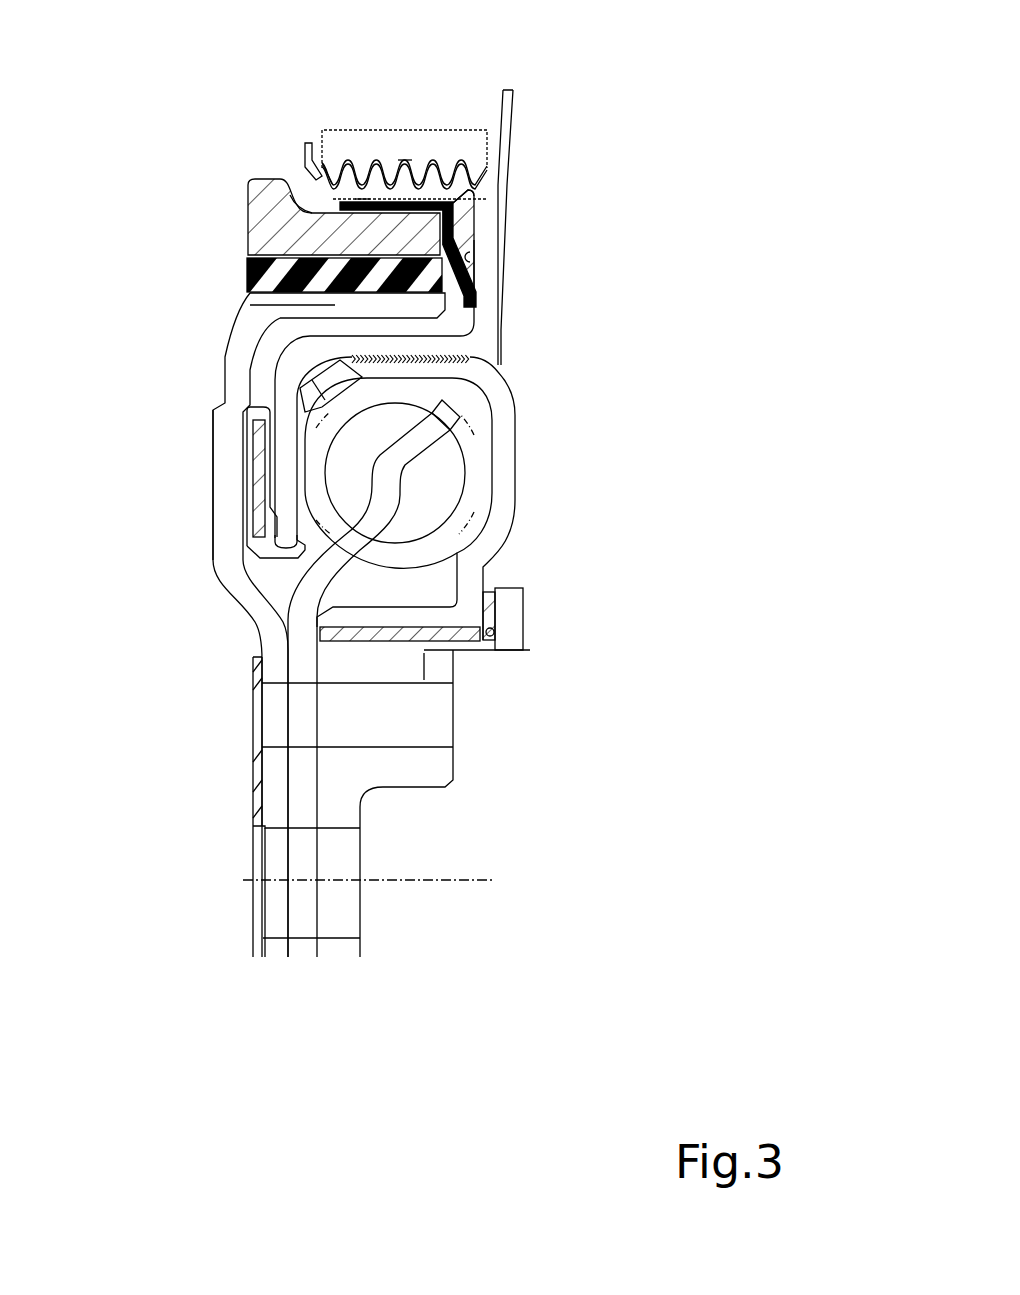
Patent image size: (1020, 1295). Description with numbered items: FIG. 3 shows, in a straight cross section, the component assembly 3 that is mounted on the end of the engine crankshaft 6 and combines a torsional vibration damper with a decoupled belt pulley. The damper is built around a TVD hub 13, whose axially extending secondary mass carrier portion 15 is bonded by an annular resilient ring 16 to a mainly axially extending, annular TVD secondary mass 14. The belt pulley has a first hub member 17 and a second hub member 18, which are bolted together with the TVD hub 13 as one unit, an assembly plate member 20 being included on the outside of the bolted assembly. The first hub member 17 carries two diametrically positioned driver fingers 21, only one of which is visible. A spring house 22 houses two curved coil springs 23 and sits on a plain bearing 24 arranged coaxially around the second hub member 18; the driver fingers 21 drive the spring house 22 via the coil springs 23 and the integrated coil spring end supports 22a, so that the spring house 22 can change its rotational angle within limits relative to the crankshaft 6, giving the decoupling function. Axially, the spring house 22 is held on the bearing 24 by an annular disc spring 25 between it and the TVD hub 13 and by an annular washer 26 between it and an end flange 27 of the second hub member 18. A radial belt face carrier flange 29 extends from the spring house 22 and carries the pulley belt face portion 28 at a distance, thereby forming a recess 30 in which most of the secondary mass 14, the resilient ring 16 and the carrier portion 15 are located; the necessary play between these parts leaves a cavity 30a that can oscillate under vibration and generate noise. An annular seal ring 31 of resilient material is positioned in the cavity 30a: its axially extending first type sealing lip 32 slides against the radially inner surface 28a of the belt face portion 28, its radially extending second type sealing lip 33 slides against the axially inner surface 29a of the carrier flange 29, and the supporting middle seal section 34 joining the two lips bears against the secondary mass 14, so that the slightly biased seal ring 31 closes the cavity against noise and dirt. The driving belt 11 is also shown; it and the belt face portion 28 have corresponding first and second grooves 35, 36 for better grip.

The component assembly 3 is at (174, 423).
The crankshaft 6 is at (466, 879).
The driving belt 11 is at (467, 142).
The TVD hub 13 is at (243, 593).
The TVD secondary mass 14 is at (262, 222).
The secondary mass carrier portion 15 is at (330, 305).
The annular resilient ring 16 is at (247, 275).
The belt pulley first hub member 17 is at (300, 667).
The belt pulley second hub member 18 is at (410, 668).
The assembly plate member 20 is at (258, 800).
The driver fingers 21 is at (405, 460).
The spring house 22 is at (496, 393).
The coil spring end supports 22a is at (295, 435).
The curved coil springs 23 is at (475, 460).
The plain bearing 24 is at (460, 637).
The annular disc spring 25 is at (254, 495).
The annular washer 26 is at (488, 608).
The end flange 27 is at (517, 631).
The pulley belt face portion 28 is at (291, 160).
The radially inner surface of the belt face portion 28a is at (322, 164).
The radial belt face carrier flange 29 is at (480, 233).
The axially inner surface of the carrier flange 29a is at (477, 268).
The recess 30 is at (483, 350).
The cavity 30a is at (297, 182).
The annular seal ring 31 is at (464, 225).
The first type sealing lip 32 is at (410, 157).
The second type sealing lip 33 is at (477, 295).
The supporting middle seal section 34 is at (468, 213).
The first grooves 35 is at (338, 168).
The second grooves 36 is at (362, 200).